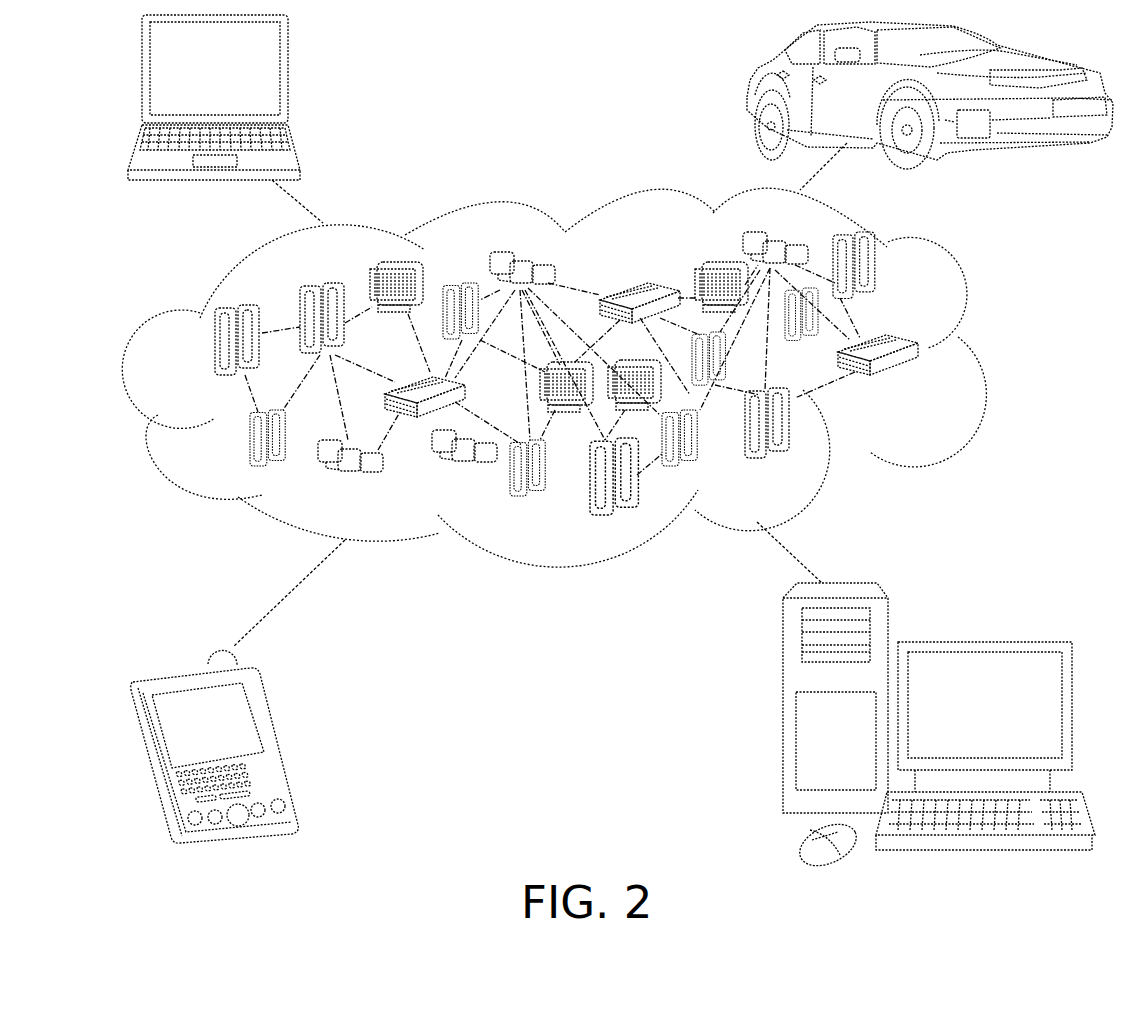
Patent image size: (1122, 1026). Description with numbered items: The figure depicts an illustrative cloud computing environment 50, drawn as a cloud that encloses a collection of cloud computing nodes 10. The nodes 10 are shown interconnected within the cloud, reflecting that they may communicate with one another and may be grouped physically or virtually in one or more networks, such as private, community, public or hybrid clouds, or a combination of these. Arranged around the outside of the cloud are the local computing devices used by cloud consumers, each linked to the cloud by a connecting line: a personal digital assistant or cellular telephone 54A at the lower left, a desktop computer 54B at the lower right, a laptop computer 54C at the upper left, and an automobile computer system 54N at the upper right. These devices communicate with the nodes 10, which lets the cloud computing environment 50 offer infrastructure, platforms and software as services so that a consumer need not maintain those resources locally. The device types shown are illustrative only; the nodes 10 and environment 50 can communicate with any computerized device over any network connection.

The cloud computing environment 50 is at (983, 353).
The cloud computing nodes 10 is at (921, 379).
The personal digital assistant (PDA) or cellular telephone 54A is at (275, 735).
The desktop computer 54B is at (982, 640).
The laptop computer 54C is at (287, 78).
The automobile computer system 54N is at (750, 92).